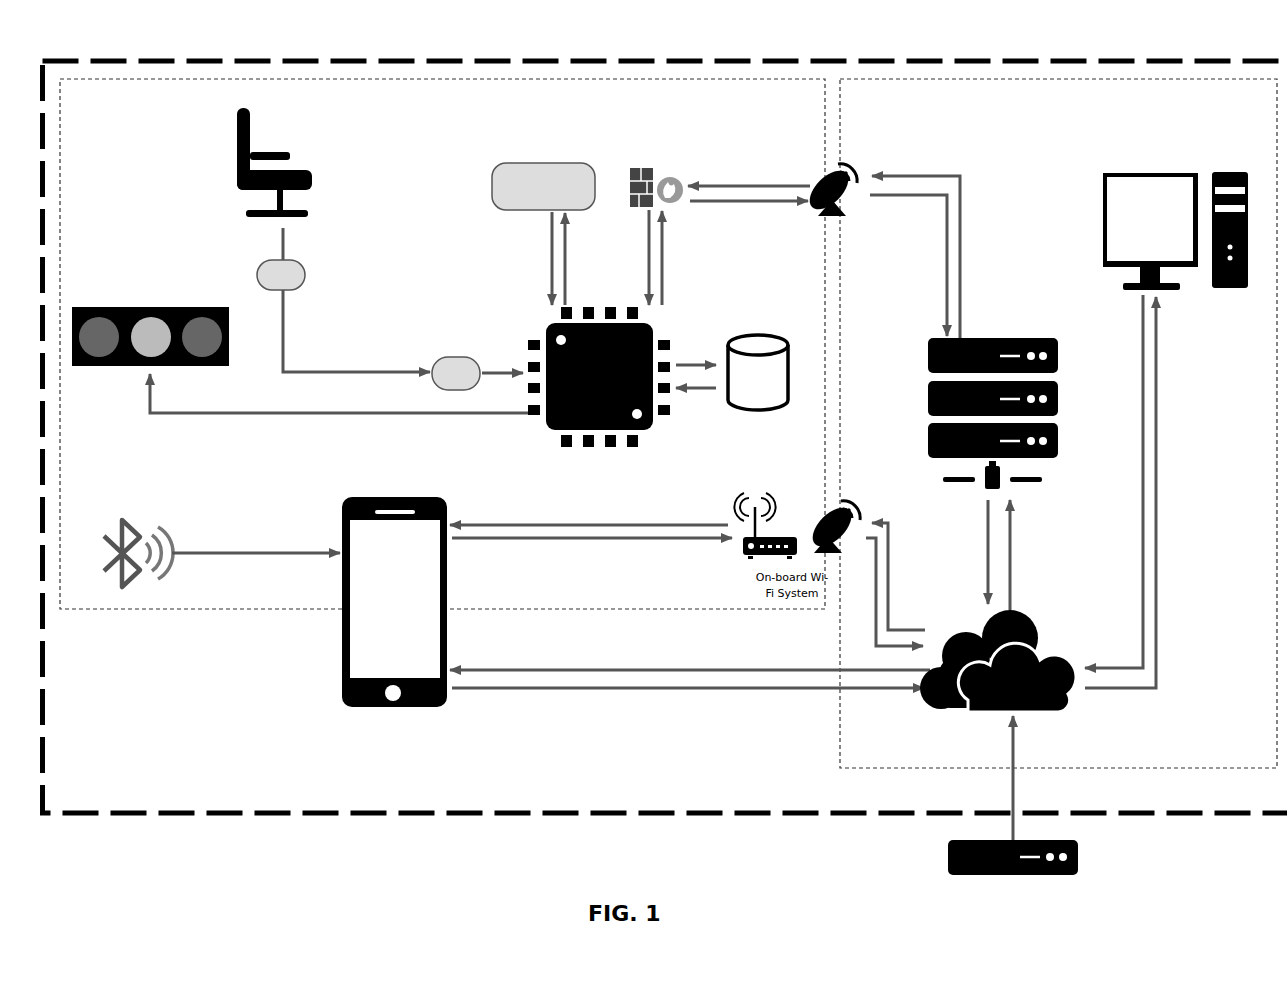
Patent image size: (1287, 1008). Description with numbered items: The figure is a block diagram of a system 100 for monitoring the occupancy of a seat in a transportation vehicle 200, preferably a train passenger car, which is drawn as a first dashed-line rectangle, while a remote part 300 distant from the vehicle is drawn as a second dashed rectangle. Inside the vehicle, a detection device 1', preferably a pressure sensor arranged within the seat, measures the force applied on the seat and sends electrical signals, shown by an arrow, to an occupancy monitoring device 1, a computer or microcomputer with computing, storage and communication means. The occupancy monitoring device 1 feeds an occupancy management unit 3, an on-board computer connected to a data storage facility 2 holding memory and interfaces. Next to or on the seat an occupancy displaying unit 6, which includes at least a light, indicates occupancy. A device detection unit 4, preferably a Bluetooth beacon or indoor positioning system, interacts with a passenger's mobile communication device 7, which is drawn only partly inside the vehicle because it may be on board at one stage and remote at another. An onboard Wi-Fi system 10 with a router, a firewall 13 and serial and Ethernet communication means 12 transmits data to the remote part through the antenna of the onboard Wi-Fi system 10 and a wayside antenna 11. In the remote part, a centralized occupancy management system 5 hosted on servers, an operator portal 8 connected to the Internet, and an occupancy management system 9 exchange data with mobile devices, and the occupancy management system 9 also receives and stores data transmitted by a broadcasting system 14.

The system 100 is at (727, 50).
The transportation vehicle 200 is at (129, 137).
The remote part 300 is at (1229, 615).
The occupancy monitoring device 1 is at (469, 350).
The detection device 1' is at (343, 300).
The data storage facility 2 is at (755, 333).
The occupancy management unit 3 is at (655, 430).
The device detection unit 4 is at (120, 590).
The centralized occupancy management system 5 is at (1015, 336).
The occupancy displaying unit 6 is at (107, 368).
The mobile communication device 7 is at (440, 712).
The operator portal 8 is at (1178, 300).
The occupancy management system 9 is at (1033, 716).
The onboard Wi-Fi system 10 is at (852, 497).
The antenna 11 is at (870, 165).
The serial and Ethernet communication means 12 is at (490, 172).
The firewall 13 is at (652, 146).
The broadcasting system 14 is at (1082, 870).